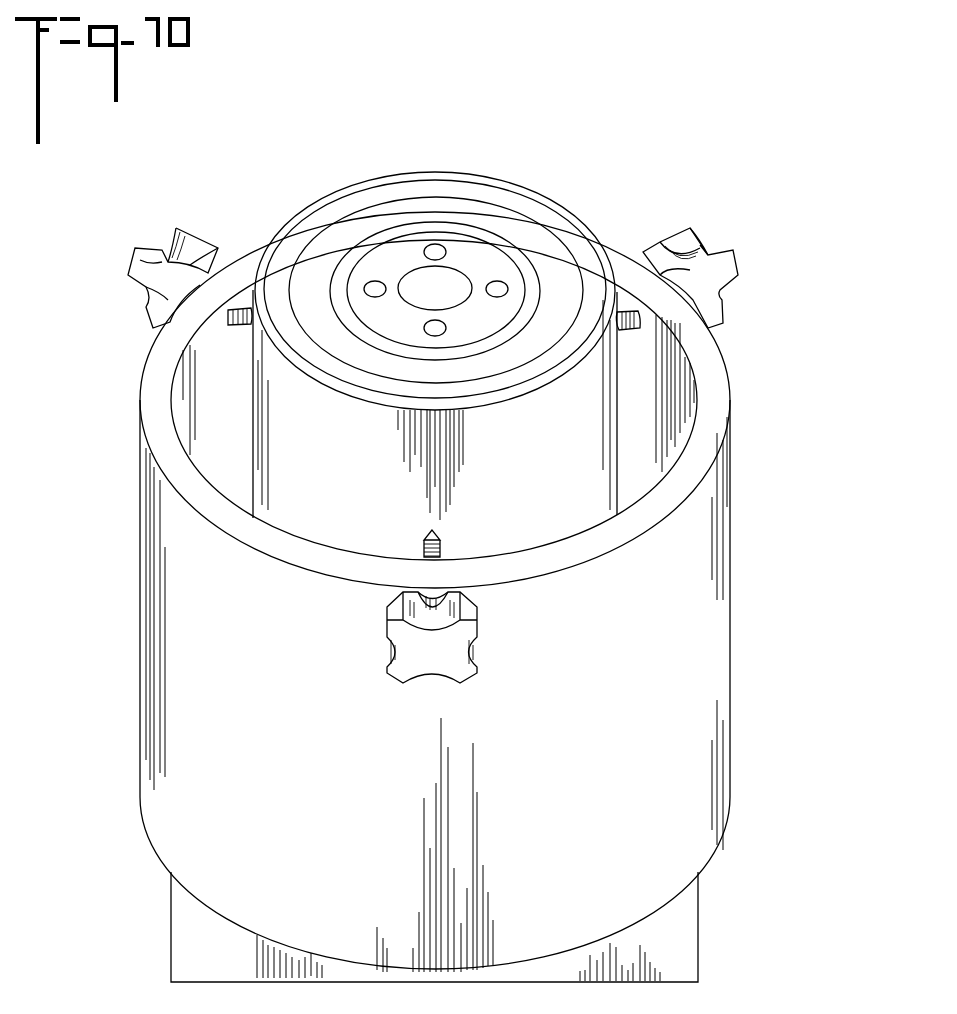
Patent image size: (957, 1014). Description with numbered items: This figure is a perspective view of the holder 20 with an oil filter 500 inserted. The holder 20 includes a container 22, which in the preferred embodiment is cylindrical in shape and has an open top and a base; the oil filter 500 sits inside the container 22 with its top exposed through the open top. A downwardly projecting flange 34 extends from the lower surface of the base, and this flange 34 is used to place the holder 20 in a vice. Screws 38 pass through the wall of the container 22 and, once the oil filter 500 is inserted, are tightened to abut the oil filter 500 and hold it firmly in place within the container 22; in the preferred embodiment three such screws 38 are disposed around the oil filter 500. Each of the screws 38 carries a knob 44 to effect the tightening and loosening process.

The holder 20 is at (786, 364).
The container 22 is at (140, 686).
The flange 34 is at (171, 964).
The screws 38 is at (622, 308).
The knob 44 is at (708, 254).
The oil filter 500 is at (340, 182).